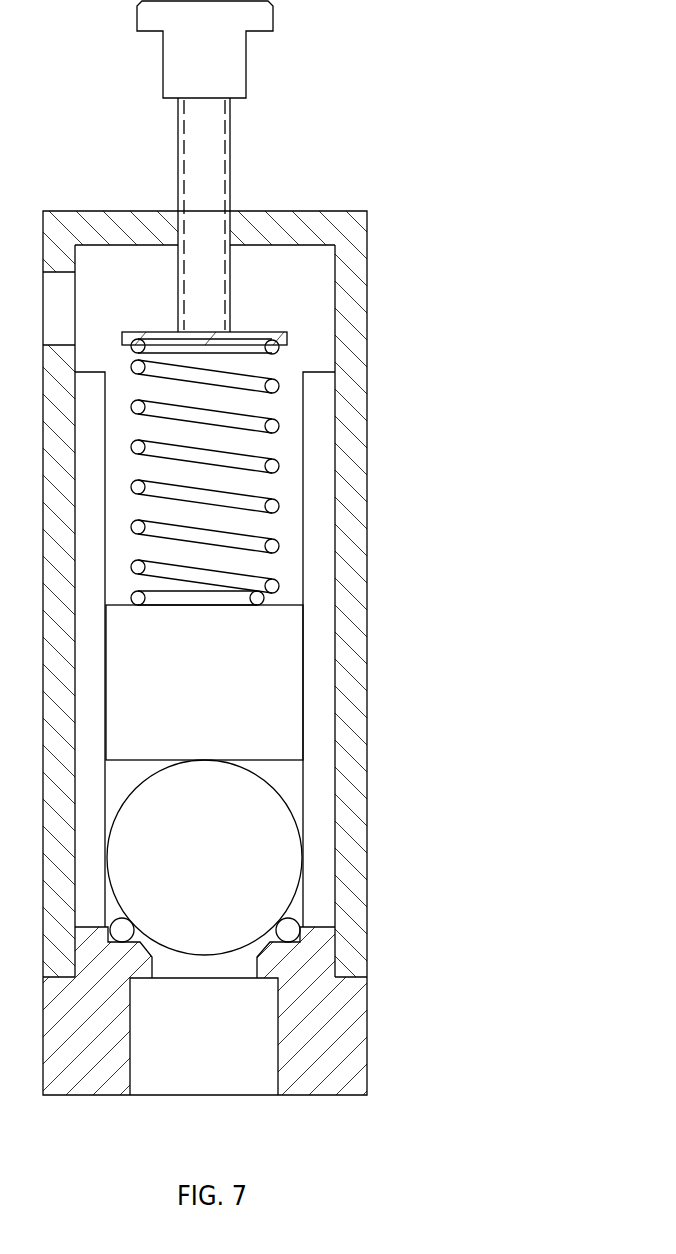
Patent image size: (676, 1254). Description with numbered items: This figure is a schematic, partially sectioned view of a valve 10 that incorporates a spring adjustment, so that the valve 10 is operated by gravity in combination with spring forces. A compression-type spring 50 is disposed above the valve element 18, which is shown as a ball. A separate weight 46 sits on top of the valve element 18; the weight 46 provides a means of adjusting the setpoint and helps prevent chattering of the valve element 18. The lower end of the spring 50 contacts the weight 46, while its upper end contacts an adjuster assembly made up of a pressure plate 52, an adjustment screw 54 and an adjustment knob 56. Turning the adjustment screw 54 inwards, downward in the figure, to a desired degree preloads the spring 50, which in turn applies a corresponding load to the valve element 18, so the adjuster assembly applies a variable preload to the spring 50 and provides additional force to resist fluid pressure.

The valve 10 is at (457, 231).
The valve element 18 is at (190, 870).
The weight 46 is at (190, 707).
The spring 50 is at (272, 464).
The pressure plate 52 is at (265, 335).
The adjustment screw 54 is at (218, 157).
The adjustment knob 56 is at (189, 52).